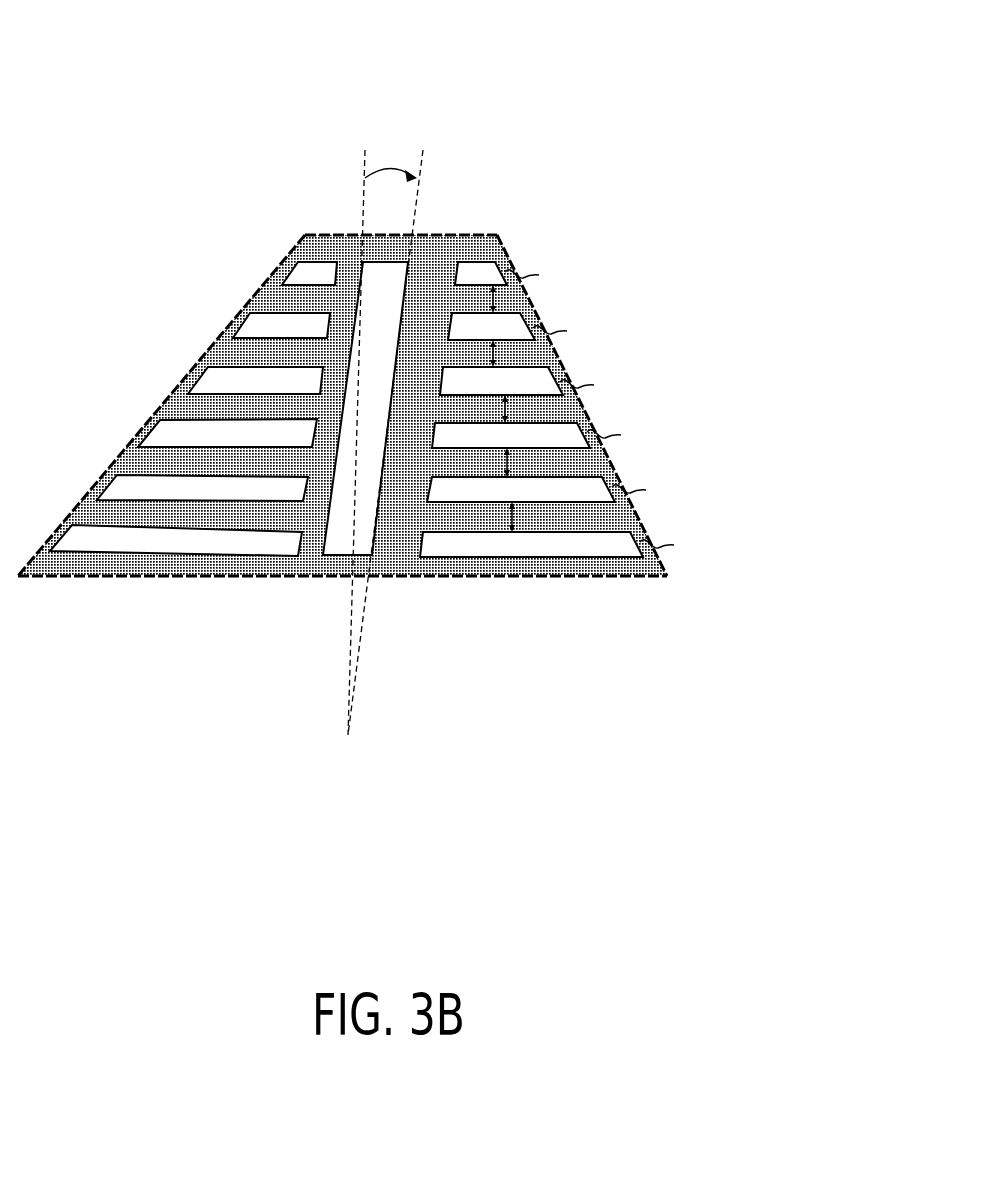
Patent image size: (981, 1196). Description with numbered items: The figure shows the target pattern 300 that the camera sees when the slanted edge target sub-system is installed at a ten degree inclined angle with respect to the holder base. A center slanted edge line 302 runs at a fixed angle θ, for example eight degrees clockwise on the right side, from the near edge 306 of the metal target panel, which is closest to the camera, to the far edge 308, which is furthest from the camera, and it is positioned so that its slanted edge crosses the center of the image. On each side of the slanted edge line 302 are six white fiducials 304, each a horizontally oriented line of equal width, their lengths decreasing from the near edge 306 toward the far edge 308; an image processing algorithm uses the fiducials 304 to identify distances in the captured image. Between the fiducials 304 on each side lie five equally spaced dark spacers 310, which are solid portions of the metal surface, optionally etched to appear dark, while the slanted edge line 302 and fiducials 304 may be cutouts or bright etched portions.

The target pattern 300 is at (204, 142).
The center slanted edge line 302 is at (340, 555).
The white fiducials 304 is at (652, 246).
The near edge 306 is at (517, 580).
The far edge 308 is at (473, 235).
The dark spacers 310 is at (483, 408).